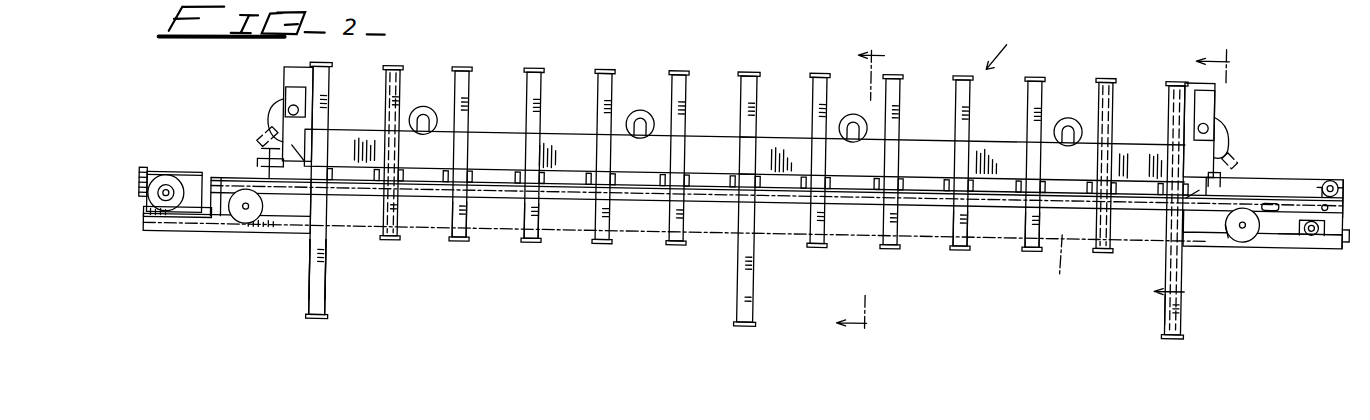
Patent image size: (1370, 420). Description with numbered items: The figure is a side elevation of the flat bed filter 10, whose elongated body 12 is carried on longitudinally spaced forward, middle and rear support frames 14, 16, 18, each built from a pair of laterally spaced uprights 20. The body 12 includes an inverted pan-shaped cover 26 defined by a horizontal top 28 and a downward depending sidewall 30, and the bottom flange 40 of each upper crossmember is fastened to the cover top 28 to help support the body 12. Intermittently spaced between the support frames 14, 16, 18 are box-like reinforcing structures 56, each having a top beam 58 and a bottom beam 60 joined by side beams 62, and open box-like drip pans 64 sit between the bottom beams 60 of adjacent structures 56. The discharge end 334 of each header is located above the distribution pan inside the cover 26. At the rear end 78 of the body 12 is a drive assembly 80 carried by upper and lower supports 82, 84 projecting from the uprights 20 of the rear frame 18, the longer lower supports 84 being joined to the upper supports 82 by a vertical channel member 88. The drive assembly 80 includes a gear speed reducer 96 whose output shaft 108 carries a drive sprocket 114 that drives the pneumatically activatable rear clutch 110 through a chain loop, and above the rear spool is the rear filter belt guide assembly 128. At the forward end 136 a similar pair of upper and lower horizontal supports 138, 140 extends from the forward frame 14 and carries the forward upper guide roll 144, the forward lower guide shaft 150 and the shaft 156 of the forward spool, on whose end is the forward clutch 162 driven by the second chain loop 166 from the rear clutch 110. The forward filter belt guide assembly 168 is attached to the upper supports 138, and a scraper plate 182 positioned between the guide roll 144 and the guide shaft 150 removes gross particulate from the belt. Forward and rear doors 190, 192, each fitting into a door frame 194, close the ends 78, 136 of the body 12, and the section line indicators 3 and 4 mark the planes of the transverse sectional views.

The section line 3- 3 is at (863, 196).
The section line 4- 4 is at (1200, 178).
The filter 10 is at (848, 0).
The filter body 12 is at (998, 129).
The forward support frame 14 is at (1168, 289).
The middle support frame 16 is at (745, 65).
The rear support frame 18 is at (318, 294).
The uprights 20 is at (312, 249).
The cover 26 is at (495, 137).
The cover top 28 is at (343, 127).
The cover sidewall 30 is at (408, 171).
The bottom flange 40 is at (763, 129).
The box-like structures 56 is at (467, 211).
The top beam 58 is at (521, 66).
The bottom beam 60 is at (968, 233).
The side beams 62 is at (605, 212).
The drip pans 64 is at (343, 176).
The rear end 78 is at (238, 149).
The drive assembly 80 is at (193, 167).
The upper supports 82 is at (237, 183).
The lower supports 84 is at (198, 222).
The vertical channel member 88 is at (217, 216).
The gear speed reducer 96 is at (163, 172).
The output shaft 108 is at (169, 210).
The rear clutch 110 is at (247, 226).
The drive sprocket 114 is at (178, 214).
The rear filter belt guide assembly 128 is at (253, 134).
The forward end 136 is at (1232, 132).
The upper horizontal supports 138 is at (1344, 182).
The lower horizontal supports 140 is at (1323, 226).
The forward upper guide roll 144 is at (1330, 163).
The forward lower guide shaft 150 is at (1310, 218).
The spool shaft 156 is at (1245, 206).
The forward clutch 162 is at (1231, 217).
The second chain loop 166 is at (1036, 147).
The forward filter belt guide assembly 168 is at (1283, 161).
The scraper plate 182 is at (1344, 236).
The forward door 190 is at (1212, 152).
The rear door 192 is at (275, 100).
The door frame 194 is at (292, 146).
The discharge end 334 is at (637, 118).